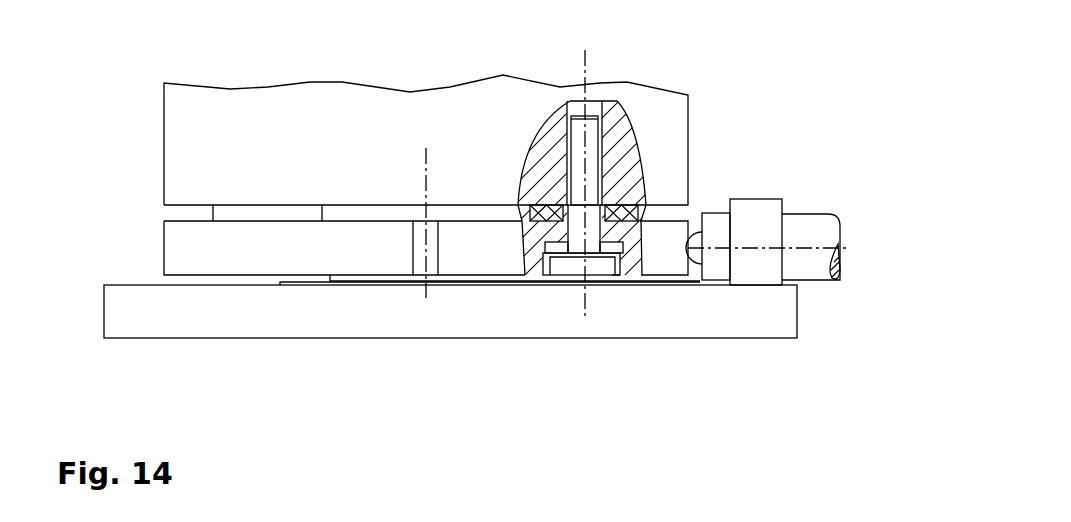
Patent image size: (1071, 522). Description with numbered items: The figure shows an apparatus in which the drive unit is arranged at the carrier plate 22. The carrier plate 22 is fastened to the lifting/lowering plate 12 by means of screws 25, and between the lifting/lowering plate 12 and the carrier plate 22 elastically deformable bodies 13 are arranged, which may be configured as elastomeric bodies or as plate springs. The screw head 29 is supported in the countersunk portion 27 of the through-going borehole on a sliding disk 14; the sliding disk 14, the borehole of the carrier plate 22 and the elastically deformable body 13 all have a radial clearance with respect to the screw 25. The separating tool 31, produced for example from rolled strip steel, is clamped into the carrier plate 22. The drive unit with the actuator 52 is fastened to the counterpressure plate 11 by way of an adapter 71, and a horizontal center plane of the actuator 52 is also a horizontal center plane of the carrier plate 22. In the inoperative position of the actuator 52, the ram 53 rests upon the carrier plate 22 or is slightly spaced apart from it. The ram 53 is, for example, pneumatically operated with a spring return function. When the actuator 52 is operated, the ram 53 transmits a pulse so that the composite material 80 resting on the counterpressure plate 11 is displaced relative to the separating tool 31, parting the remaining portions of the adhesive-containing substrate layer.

The counterpressure plate 11 is at (137, 312).
The lifting/lowering plate 12 is at (201, 152).
The elastically deformable body 13 is at (618, 205).
The sliding disk 14 is at (617, 277).
The carrier plate 22 is at (182, 250).
The screw 25 is at (588, 132).
The countersunk portion 27 is at (546, 242).
The screw head 29 is at (563, 263).
The separating tool 31 is at (383, 277).
The actuator 52 is at (823, 227).
The ram 53 is at (695, 241).
The adapter 71 is at (747, 203).
The composite material 80 is at (303, 286).